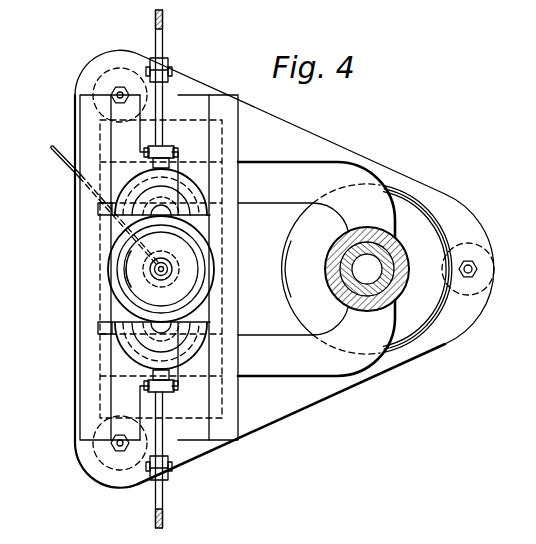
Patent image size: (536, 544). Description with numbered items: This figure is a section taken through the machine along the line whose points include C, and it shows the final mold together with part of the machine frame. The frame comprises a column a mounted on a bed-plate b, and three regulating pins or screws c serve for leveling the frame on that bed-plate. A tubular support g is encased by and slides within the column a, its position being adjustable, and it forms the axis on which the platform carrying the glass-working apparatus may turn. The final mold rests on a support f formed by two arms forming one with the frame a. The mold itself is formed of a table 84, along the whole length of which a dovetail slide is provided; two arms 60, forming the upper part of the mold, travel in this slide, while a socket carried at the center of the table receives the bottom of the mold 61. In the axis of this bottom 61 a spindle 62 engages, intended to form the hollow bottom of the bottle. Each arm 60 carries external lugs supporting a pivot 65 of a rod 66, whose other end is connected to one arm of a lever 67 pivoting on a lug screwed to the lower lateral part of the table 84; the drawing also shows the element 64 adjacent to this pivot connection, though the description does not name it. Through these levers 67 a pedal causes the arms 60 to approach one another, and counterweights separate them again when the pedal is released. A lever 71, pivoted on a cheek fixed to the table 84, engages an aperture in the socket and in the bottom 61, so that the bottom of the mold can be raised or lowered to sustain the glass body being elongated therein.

The arms 60 is at (182, 183).
The bottom of the mold 61 is at (164, 259).
The spindle 62 is at (164, 275).
The clevis 64 is at (164, 148).
The pivot 65 is at (178, 152).
The rod 66 is at (165, 92).
The lever 67 is at (163, 44).
The lever 71 is at (92, 205).
The table 84 is at (97, 423).
The column a is at (404, 257).
The bed-plate b is at (437, 195).
The regulating pins or screws c is at (478, 270).
The section line point C is at (110, 92).
The support f is at (345, 269).
The tubular support g is at (388, 280).